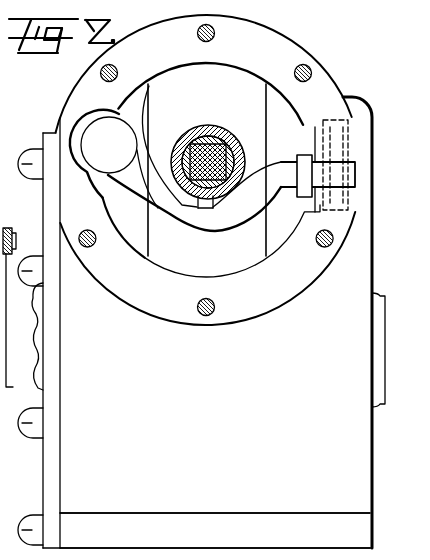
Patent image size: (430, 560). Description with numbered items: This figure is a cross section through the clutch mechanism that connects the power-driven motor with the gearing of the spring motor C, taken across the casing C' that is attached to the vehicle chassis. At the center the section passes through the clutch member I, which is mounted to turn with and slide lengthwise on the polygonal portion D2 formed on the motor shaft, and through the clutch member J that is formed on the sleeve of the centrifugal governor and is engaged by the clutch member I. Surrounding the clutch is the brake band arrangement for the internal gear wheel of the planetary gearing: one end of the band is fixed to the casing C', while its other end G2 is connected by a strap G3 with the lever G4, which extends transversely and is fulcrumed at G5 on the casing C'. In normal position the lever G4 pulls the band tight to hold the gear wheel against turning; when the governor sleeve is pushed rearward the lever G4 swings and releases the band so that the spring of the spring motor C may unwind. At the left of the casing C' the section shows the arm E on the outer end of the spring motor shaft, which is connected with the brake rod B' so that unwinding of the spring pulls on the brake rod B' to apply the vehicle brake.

The spring motor C is at (201, 281).
The casing C' is at (215, 488).
The clutch member I is at (186, 130).
The clutch member J is at (205, 128).
The polygonal portion D2 is at (220, 126).
The end of brake band G2 is at (304, 162).
The strap G3 is at (205, 209).
The lever G4 is at (240, 213).
The fulcrum G5 is at (337, 160).
The brake rod B' is at (9, 295).
The arm E is at (0, 295).